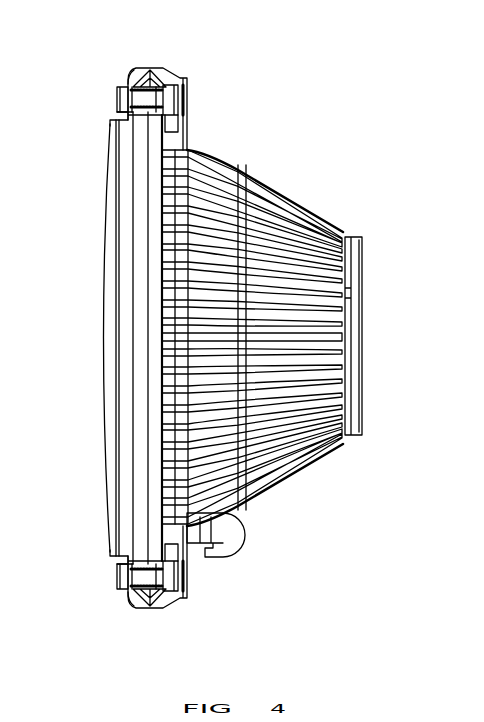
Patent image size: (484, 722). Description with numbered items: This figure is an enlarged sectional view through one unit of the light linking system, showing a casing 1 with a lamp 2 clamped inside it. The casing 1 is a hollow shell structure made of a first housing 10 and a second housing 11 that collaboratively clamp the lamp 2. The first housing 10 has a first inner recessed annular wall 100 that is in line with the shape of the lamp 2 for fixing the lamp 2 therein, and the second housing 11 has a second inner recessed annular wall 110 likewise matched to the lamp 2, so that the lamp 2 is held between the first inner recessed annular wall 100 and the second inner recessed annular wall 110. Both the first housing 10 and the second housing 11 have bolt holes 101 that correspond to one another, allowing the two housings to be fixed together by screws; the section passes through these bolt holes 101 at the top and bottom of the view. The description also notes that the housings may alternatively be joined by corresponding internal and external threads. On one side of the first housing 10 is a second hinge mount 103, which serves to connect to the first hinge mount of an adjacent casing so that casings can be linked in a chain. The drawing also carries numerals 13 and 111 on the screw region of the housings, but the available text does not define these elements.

The casing 1 is at (110, 125).
The lamp 2 is at (305, 212).
The first housing 10 is at (153, 80).
The second housing 11 is at (141, 80).
The nut 13 is at (120, 95).
The first inner recessed annular wall 100 is at (170, 128).
The bolt holes 101 is at (168, 80).
The second hinge mount 103 is at (238, 530).
The second inner recessed annular wall 110 is at (125, 121).
The screw head recess 111 is at (130, 80).